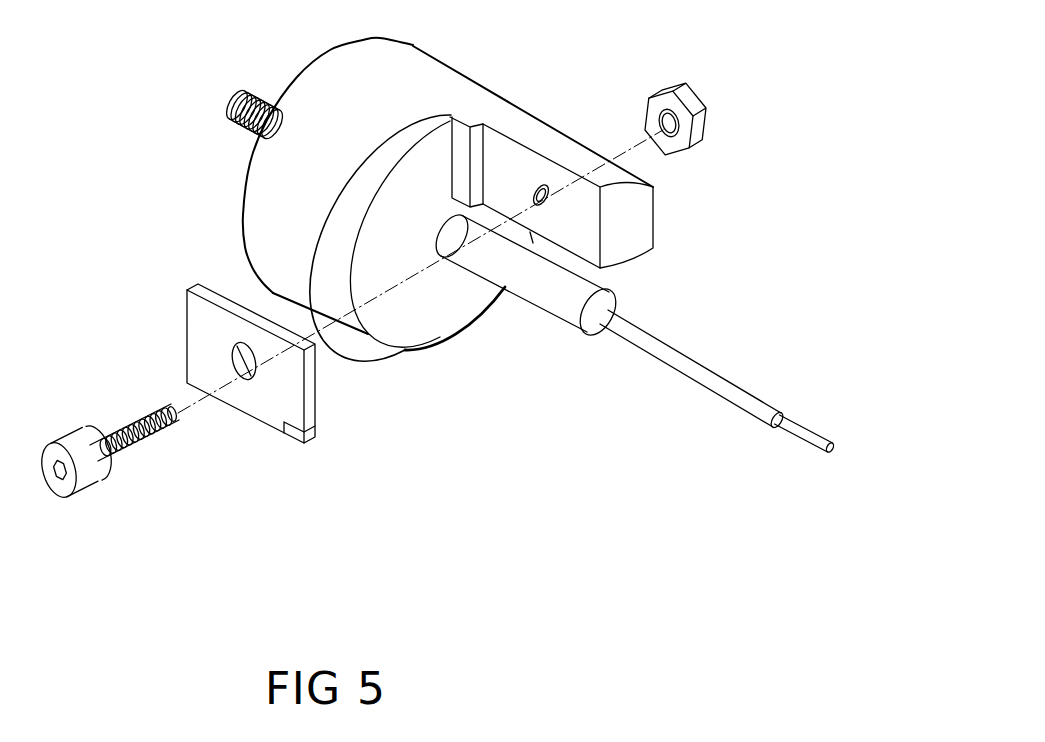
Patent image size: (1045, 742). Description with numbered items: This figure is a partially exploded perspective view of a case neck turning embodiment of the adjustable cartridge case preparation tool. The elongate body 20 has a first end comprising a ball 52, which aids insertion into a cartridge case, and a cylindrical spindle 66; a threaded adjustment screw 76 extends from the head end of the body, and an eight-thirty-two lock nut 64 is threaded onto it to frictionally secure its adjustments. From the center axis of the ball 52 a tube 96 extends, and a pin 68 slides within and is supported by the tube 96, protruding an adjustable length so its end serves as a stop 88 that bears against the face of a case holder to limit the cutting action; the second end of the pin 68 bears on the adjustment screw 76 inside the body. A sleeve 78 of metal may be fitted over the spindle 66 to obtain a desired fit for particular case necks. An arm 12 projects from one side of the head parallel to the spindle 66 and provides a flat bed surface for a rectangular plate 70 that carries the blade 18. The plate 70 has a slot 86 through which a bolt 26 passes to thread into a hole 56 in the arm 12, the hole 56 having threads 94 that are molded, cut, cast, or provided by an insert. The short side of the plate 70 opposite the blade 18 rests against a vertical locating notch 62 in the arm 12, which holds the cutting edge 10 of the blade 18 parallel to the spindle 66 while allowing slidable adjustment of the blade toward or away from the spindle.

The cutting edge 10 is at (300, 446).
The arm 12 is at (630, 200).
The blade 18 is at (316, 434).
The elongate body 20 is at (456, 63).
The bolt 26 is at (110, 440).
The ball 52 is at (613, 311).
The hole 56 is at (552, 200).
The locating notch 62 is at (480, 140).
The lock nut 64 is at (704, 126).
The spindle 66 is at (455, 250).
The pin 68 is at (806, 432).
The plate 70 is at (215, 332).
The adjustment screw 76 is at (230, 120).
The sleeve 78 is at (533, 298).
The slot 86 is at (233, 356).
The stop 88 is at (826, 449).
The threads 94 is at (545, 186).
The tube 96 is at (722, 378).